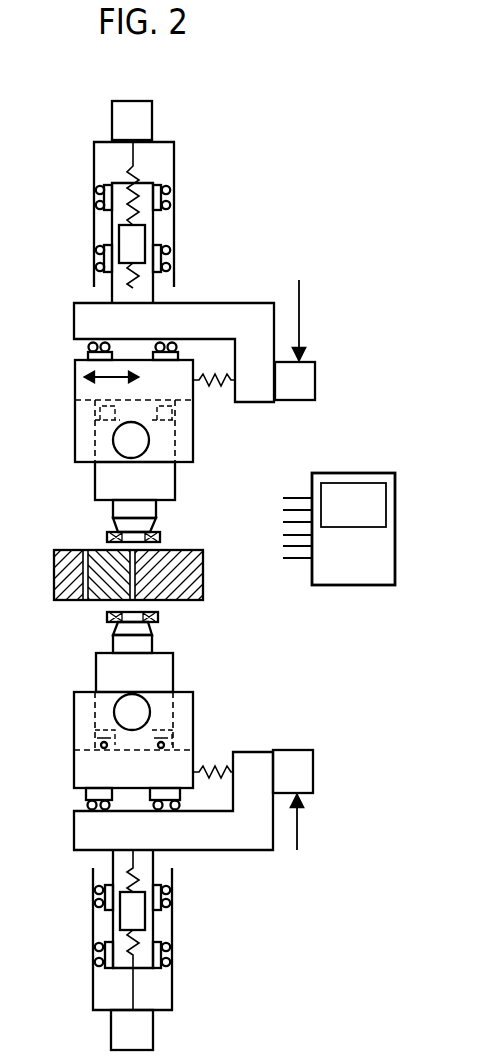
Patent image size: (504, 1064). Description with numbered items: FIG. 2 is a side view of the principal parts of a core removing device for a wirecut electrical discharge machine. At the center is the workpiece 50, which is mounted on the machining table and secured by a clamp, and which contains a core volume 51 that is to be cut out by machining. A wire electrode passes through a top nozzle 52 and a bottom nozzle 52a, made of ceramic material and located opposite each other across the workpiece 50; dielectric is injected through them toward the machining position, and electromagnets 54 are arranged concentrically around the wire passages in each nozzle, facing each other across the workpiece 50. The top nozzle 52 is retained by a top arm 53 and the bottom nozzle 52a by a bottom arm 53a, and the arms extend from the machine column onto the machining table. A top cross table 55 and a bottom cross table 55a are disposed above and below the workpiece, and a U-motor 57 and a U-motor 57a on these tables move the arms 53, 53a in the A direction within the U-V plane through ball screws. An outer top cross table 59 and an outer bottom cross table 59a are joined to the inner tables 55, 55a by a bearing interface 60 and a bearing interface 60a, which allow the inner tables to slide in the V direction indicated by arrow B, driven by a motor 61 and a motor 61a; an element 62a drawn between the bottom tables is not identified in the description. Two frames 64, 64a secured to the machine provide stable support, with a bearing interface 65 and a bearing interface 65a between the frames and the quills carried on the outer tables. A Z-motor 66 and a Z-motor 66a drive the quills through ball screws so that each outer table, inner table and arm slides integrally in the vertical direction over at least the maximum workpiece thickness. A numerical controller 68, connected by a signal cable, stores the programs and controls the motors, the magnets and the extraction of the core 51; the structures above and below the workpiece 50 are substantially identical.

The workpiece 50 is at (178, 600).
The core volume 51 is at (94, 600).
The top nozzle 52 is at (156, 508).
The bottom nozzle 52a is at (152, 640).
The top arm 53 is at (175, 485).
The bottom arm 53a is at (173, 672).
The electromagnets 54 is at (107, 537).
The top cross table 55 is at (80, 386).
The bottom cross table 55a is at (74, 765).
The U-motor 57 is at (149, 440).
The U-motor 57a is at (150, 712).
The top cross table 59 is at (228, 303).
The bottom cross table 59a is at (248, 850).
The bearing interface 60 is at (86, 350).
The bearing interface 60a is at (88, 805).
The motor 61 is at (315, 382).
The motor 61a is at (313, 774).
The lower spring 62a is at (213, 762).
The frame 64 is at (174, 162).
The frame 64a is at (172, 985).
The bearing interface 65 is at (170, 208).
The bearing interface 65a is at (172, 942).
The Z-motor 66 is at (152, 118).
The Z-motor 66a is at (150, 1035).
The numerical controller 68 is at (351, 472).